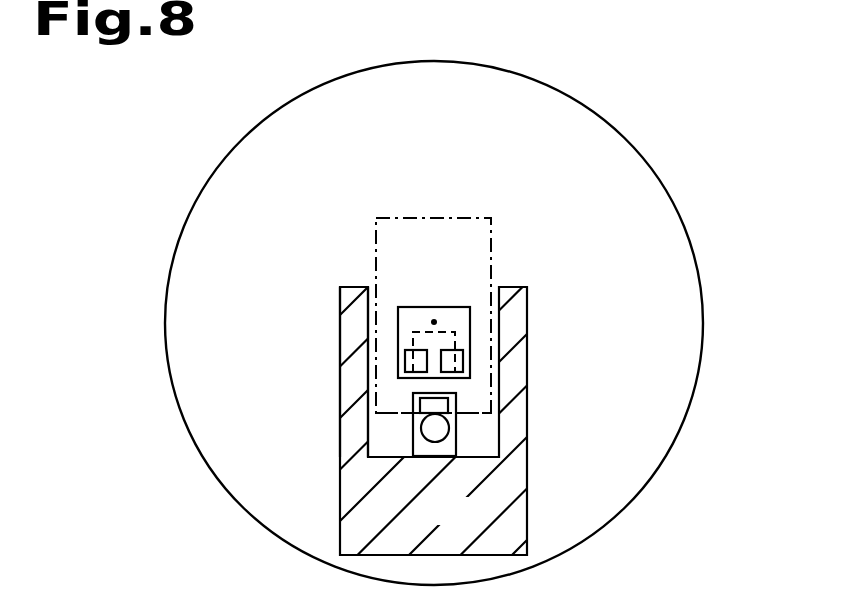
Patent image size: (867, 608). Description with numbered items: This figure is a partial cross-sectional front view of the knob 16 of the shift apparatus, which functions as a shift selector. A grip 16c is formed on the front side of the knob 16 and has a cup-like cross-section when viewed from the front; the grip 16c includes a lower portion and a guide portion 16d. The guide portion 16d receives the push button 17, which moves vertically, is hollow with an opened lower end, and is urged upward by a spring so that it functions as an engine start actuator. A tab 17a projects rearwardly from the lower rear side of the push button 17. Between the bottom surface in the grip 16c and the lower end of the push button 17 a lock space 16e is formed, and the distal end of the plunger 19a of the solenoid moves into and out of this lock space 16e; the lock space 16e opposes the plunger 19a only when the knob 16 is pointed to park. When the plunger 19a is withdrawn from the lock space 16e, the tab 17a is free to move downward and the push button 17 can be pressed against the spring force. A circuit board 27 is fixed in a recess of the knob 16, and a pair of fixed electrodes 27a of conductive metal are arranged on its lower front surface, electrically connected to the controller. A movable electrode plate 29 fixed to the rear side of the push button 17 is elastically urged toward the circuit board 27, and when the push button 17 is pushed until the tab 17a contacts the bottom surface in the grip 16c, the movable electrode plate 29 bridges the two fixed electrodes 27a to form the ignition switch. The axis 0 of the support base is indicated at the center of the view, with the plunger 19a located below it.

The knob 16 is at (668, 246).
The grip 16c is at (382, 483).
The guide portion 16d is at (352, 327).
The lock space 16e is at (452, 449).
The push button 17 is at (492, 233).
The tab 17a is at (491, 404).
The plunger 19a is at (438, 430).
The circuit board 27 is at (458, 323).
The fixed electrodes 27a is at (407, 362).
The movable electrode plate 29 is at (418, 332).
The axis 0 is at (434, 314).